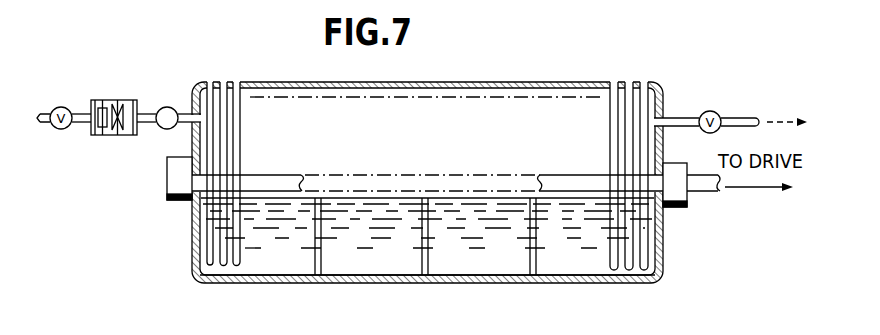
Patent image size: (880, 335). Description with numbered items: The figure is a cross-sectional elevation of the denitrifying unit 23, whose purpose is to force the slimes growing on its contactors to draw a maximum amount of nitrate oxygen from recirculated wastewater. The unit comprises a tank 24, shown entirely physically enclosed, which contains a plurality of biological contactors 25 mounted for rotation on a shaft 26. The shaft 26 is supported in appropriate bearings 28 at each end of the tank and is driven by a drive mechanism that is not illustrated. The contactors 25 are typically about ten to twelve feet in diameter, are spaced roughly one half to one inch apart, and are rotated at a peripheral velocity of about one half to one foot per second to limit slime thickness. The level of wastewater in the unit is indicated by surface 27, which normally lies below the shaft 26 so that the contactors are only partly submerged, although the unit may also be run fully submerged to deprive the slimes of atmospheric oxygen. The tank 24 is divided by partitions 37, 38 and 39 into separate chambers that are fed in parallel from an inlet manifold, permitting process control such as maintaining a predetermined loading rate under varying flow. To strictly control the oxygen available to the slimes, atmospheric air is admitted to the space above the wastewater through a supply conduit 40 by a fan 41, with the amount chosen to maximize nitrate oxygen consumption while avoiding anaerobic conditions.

The denitrifying unit 23 is at (177, 80).
The tank 24 is at (210, 284).
The biological contactors 25 is at (245, 86).
The shaft 26 is at (298, 175).
The surface 27 is at (371, 195).
The bearings 28 is at (167, 177).
The partition 37 is at (330, 276).
The partition 38 is at (422, 278).
The partition 39 is at (547, 276).
The supply conduit 40 is at (181, 101).
The fan 41 is at (103, 108).